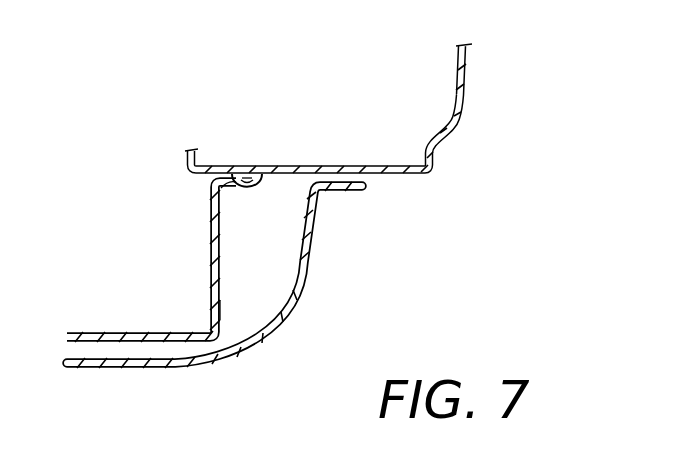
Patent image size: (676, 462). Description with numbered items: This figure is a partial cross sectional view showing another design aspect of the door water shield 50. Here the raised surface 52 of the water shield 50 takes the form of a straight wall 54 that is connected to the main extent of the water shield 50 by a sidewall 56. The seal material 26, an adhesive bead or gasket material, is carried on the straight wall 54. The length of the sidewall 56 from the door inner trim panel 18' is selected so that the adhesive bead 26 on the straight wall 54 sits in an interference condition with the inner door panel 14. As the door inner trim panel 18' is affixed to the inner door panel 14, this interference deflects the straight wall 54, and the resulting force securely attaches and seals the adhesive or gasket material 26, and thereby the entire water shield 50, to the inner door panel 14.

The inner panel 14 is at (421, 171).
The door inner trim panel 18' is at (214, 293).
The seal material 26 is at (246, 174).
The door water shield 50 is at (103, 333).
The raised surface 52 is at (213, 228).
The straight wall 54 is at (258, 191).
The sidewall 56 is at (220, 308).